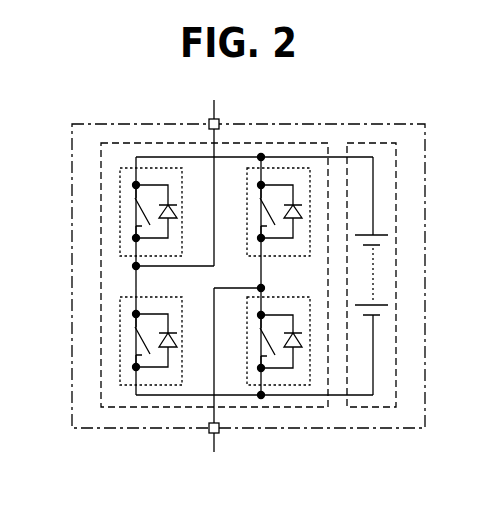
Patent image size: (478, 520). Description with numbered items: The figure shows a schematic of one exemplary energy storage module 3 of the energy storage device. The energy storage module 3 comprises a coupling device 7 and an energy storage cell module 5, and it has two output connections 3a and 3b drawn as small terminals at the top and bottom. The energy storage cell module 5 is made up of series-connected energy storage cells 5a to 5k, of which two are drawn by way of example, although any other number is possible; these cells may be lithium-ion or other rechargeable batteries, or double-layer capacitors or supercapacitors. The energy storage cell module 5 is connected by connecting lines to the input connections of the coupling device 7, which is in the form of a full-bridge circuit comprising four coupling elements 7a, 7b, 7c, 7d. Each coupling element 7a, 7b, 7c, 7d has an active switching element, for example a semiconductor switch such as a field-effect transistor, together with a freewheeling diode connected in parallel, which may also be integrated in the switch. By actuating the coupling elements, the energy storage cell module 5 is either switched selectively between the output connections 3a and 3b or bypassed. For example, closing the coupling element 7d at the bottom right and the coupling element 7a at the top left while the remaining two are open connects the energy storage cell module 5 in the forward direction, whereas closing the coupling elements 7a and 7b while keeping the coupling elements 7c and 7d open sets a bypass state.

The energy storage module 3 is at (95, 124).
The output connection 3a is at (210, 121).
The output connection 3b is at (209, 431).
The energy storage cell module 5 is at (396, 168).
The energy storage cell 5a is at (381, 243).
The energy storage cell 5k is at (381, 312).
The coupling device 7 is at (101, 163).
The coupling element 7a is at (120, 211).
The coupling element 7b is at (285, 168).
The coupling element 7c is at (120, 353).
The coupling element 7d is at (289, 386).